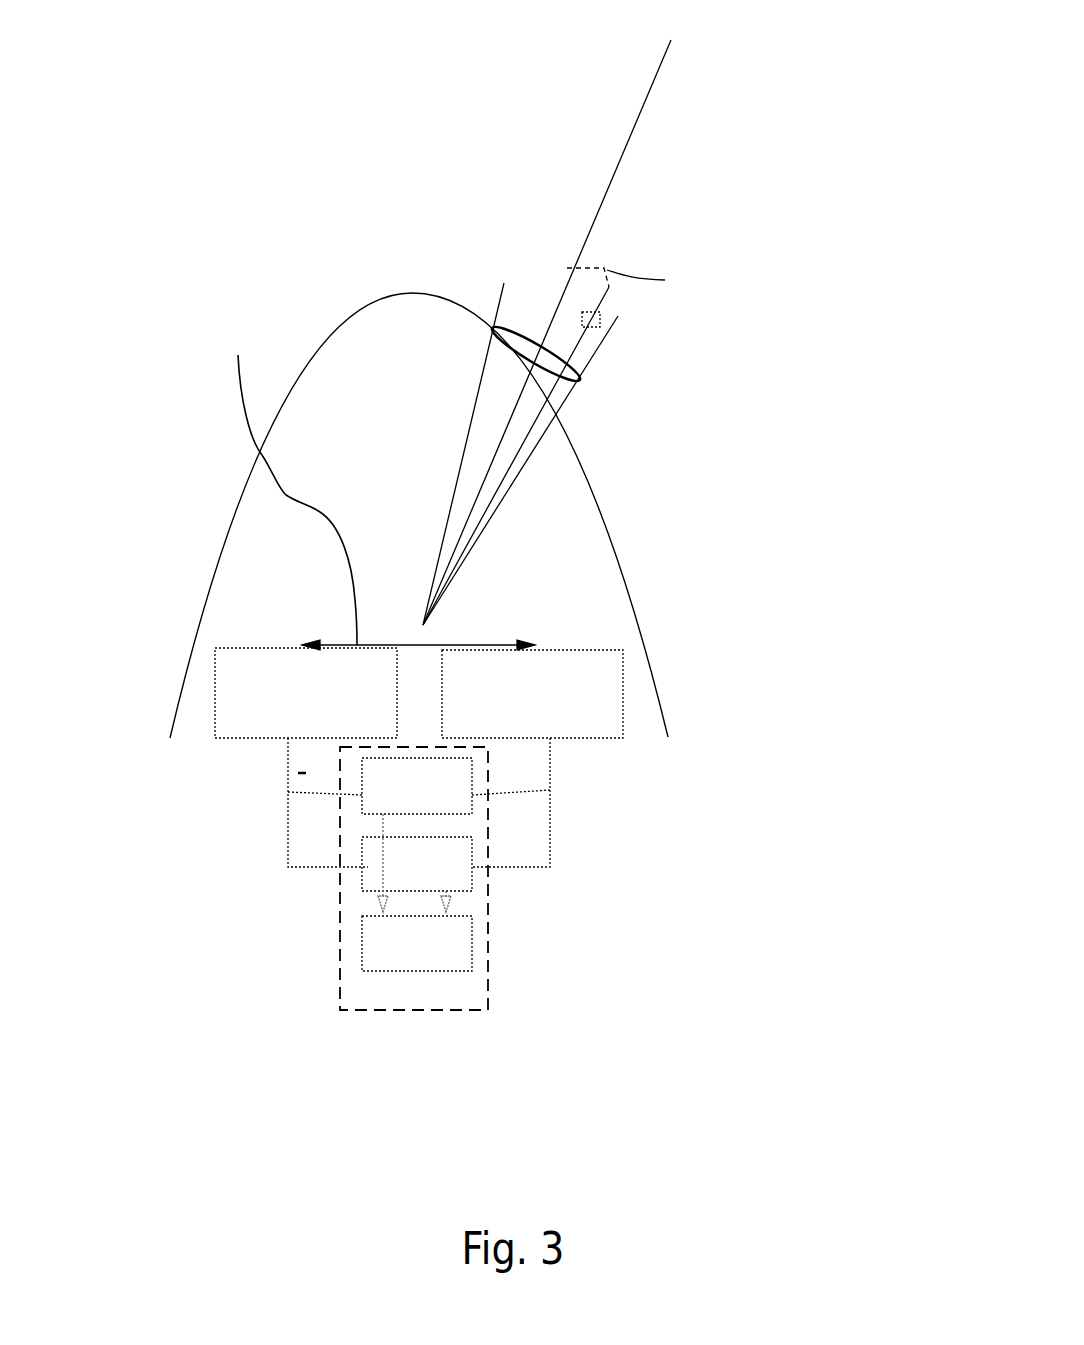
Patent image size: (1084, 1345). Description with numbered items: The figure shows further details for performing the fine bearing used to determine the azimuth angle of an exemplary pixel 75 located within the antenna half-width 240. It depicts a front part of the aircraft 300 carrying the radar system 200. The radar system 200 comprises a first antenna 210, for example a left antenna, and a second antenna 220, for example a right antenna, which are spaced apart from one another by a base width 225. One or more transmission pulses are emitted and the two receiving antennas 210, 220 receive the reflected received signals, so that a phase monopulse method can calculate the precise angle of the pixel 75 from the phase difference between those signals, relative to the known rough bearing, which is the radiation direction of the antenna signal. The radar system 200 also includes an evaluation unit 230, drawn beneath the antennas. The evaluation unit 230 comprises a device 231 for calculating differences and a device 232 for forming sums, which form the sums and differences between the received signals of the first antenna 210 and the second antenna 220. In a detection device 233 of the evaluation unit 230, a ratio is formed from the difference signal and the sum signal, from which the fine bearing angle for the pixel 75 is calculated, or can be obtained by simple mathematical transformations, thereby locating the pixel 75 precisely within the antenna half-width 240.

The radar system 200 is at (636, 842).
The first antenna 210 is at (215, 674).
The second antenna 220 is at (622, 715).
The base width 225 is at (282, 481).
The evaluation unit 230 is at (430, 921).
The device for calculating differences 231 is at (362, 812).
The device for forming sums 232 is at (362, 890).
The detection device 233 is at (432, 971).
The antenna half-width 240 is at (513, 328).
The pixel 75 is at (600, 320).
The aircraft 300 is at (618, 587).